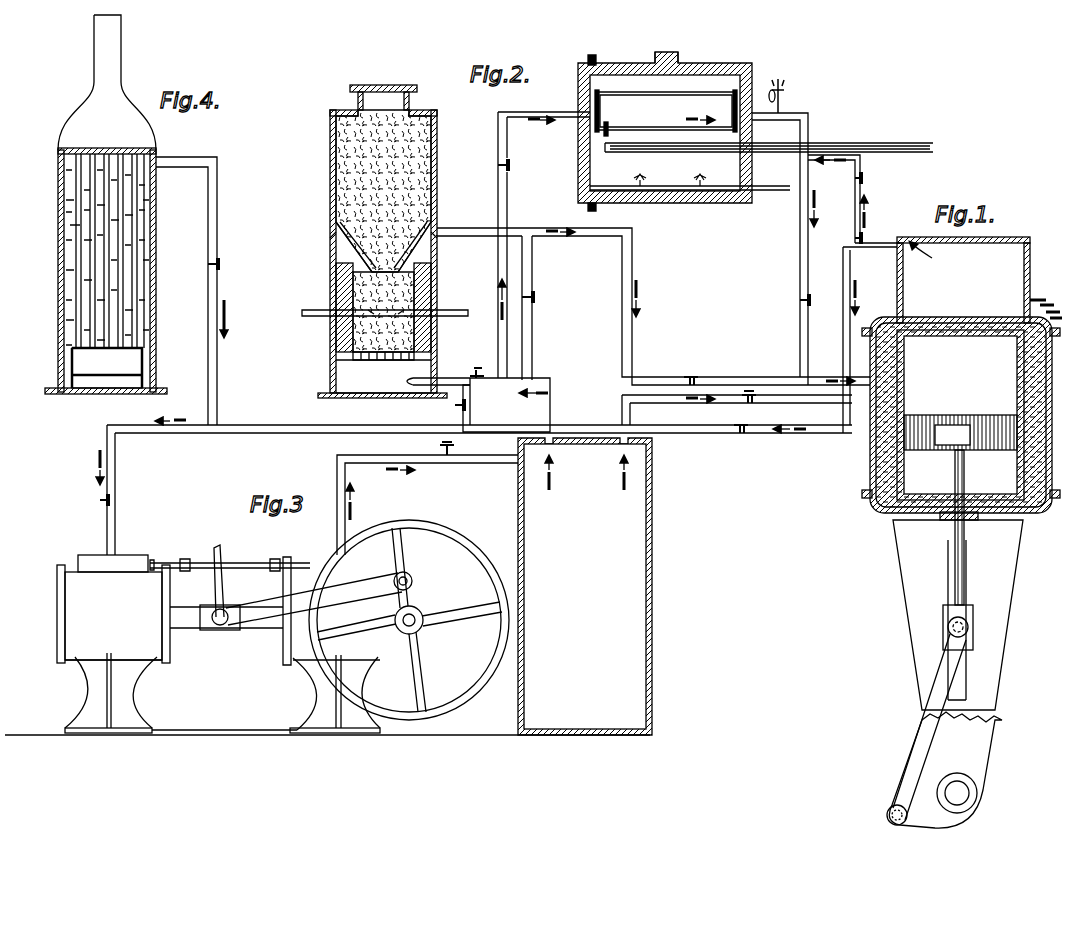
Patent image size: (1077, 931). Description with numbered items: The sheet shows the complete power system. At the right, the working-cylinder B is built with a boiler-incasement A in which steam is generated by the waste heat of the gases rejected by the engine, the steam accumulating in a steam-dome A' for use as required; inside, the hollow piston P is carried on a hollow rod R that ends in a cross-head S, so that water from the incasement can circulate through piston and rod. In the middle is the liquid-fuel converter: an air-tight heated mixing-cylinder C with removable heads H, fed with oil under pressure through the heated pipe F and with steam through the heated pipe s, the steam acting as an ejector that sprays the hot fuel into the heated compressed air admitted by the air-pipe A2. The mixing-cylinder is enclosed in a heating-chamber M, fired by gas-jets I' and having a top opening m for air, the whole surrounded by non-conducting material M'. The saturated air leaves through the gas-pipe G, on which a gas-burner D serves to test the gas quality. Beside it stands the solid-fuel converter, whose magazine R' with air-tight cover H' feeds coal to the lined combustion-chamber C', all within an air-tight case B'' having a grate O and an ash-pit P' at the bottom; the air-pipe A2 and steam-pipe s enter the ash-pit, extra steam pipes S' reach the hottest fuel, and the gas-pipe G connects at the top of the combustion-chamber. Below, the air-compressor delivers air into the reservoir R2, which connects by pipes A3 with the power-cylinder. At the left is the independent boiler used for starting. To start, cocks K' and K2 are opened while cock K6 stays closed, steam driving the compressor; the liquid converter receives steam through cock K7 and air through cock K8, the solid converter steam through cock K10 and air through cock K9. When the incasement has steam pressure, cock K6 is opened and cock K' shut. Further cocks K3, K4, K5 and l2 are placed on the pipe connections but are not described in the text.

In FIG. 4, the steam-pipe s is at (191, 291).
In FIG. 2, the steam-pipe s is at (545, 278).
In FIG. 1, the steam-pipe s is at (854, 294).
In FIG. 4, the cock K' is at (225, 265).
In FIG. 2, the magazine R' is at (373, 254).
In FIG. 2, the air-tight cover H' is at (383, 89).
In FIG. 2, the hollow rod R is at (383, 231).
In FIG. 1, the hollow rod R is at (958, 580).
In FIG. 2, the working-cylinder B is at (321, 246).
In FIG. 1, the working-cylinder B is at (960, 415).
In FIG. 2, the air-tight case B'' is at (444, 245).
In FIG. 2, the lined combustion-chamber C' is at (383, 305).
In FIG. 2, the grate O is at (383, 363).
In FIG. 2, the steam pipes S' is at (385, 301).
In FIG. 2, the ash-pit P' is at (383, 376).
In FIG. 2, the air-pipe A2 is at (501, 263).
In FIG. 2, the cock K8 is at (513, 165).
In FIG. 2, the cock K9 is at (482, 366).
In FIG. 2, the cock K10 is at (474, 407).
In FIG. 2, the gas-pipe G is at (653, 240).
In FIG. 2, the cock K4 is at (538, 297).
In FIG. 2, the cock K5 is at (692, 371).
In FIG. 2, the valve l2 is at (808, 295).
In FIG. 2, the pipes A3 is at (479, 411).
In FIG. 2, the cock K3 is at (742, 412).
In FIG. 2, the non-conducting material M' is at (665, 127).
In FIG. 2, the top opening m is at (666, 58).
In FIG. 2, the heating-chamber M is at (690, 193).
In FIG. 2, the mixing-cylinder C is at (666, 111).
In FIG. 2, the heads H is at (666, 113).
In FIG. 2, the gas-jets I' is at (666, 177).
In FIG. 2, the heated pipe F is at (769, 139).
In FIG. 2, the gas-burner D is at (783, 96).
In FIG. 1, the cock K7 is at (869, 177).
In FIG. 1, the cock K6 is at (871, 231).
In FIG. 1, the steam-dome A' is at (979, 280).
In FIG. 1, the boiler-incasement A is at (955, 415).
In FIG. 1, the hollow piston P is at (960, 432).
In FIG. 1, the cross-head S is at (944, 716).
In FIG. 3, the cock K2 is at (98, 490).
In FIG. 3, the reservoir R2 is at (585, 586).